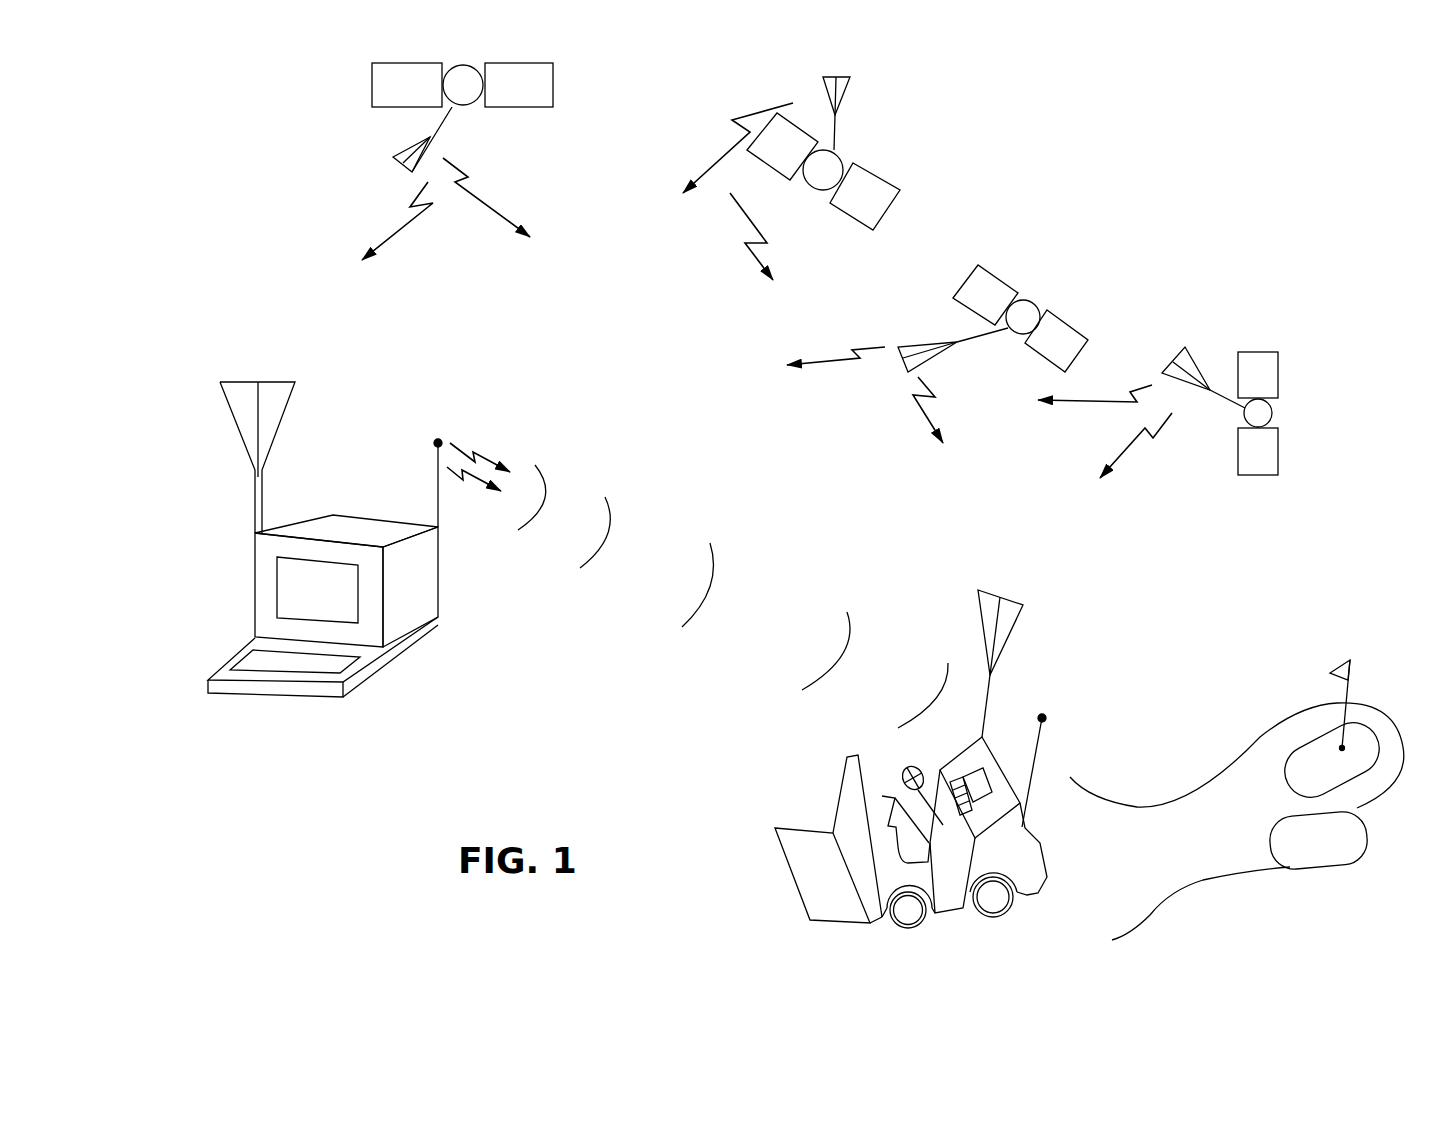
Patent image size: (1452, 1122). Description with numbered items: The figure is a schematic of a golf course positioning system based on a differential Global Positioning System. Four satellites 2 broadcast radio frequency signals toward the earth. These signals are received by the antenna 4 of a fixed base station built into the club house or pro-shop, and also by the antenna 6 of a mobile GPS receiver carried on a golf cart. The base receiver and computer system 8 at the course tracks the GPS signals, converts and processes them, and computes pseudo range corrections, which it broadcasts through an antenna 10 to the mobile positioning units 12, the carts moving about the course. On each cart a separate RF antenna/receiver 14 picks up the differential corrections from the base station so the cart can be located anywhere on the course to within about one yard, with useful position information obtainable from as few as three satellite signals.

The satellites 2 is at (465, 107).
The antenna 4 is at (258, 440).
The antenna 6 is at (1010, 640).
The base receiver and computer system 8 is at (343, 452).
The antenna 10 is at (441, 440).
The mobile positioning units 12 is at (937, 638).
The RF antenna/receiver 14 is at (1037, 740).